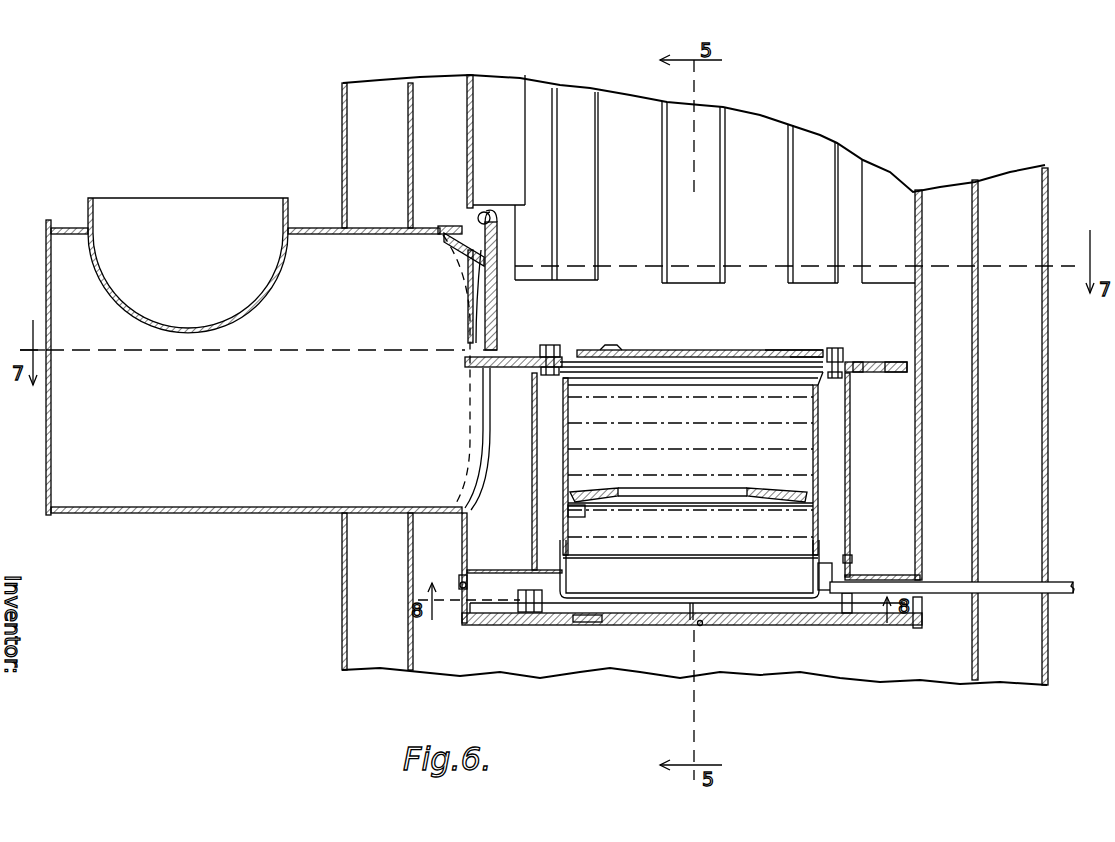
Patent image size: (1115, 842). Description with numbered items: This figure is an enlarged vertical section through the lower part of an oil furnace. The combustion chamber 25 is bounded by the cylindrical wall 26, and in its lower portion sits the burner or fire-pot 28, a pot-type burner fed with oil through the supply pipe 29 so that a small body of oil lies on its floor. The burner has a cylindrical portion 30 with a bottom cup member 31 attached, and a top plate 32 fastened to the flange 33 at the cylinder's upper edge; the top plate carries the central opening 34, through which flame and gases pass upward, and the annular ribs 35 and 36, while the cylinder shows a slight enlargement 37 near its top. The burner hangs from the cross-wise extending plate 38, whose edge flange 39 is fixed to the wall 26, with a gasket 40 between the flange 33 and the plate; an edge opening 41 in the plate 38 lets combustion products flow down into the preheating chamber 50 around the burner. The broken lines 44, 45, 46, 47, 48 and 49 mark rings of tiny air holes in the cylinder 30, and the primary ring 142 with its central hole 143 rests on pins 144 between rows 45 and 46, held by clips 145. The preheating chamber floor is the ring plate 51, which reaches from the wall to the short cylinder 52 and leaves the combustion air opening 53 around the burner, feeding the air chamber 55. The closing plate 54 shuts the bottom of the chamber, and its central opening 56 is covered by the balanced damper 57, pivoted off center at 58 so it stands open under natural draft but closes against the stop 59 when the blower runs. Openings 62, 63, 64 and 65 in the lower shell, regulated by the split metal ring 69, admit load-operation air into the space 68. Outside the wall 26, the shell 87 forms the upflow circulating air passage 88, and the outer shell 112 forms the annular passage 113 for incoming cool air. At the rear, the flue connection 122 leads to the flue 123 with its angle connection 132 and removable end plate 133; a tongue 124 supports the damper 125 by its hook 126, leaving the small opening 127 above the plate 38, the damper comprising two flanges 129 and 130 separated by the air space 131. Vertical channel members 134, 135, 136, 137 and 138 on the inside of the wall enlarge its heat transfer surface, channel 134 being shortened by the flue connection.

The combustion chamber 25 is at (753, 138).
The cylindrical wall 26 is at (923, 332).
The burner or fire-pot 28 is at (828, 445).
The supply pipe 29 is at (1062, 582).
The cylindrical portion 30 is at (801, 486).
The bottom cup member 31 is at (630, 600).
The top plate 32 is at (818, 355).
The flange 33 is at (851, 366).
The central opening 34 is at (622, 355).
The annular rib 35 is at (803, 352).
The annular rib 36 is at (778, 354).
The enlargement 37 is at (823, 386).
The cross-wise extending plate 38 is at (519, 356).
The edge flange 39 is at (893, 373).
The gasket 40 is at (532, 388).
The edge opening 41 is at (900, 362).
The ring of air holes 44 is at (791, 534).
The ring of air holes 45 is at (761, 513).
The ring of air holes 46 is at (786, 478).
The ring of air holes 47 is at (597, 450).
The ring of air holes 48 is at (597, 424).
The ring of air holes 49 is at (600, 398).
The preheating chamber 50 is at (882, 491).
The ring plate 51 is at (890, 574).
The short cylinder 52 is at (851, 558).
The combustion air opening 53 is at (817, 566).
The closing plate 54 is at (873, 627).
The air chamber 55 is at (837, 499).
The central opening 56 is at (788, 627).
The balanced damper 57 is at (738, 627).
The pivot 58 is at (700, 626).
The stop 59 is at (588, 613).
The opening 62 is at (470, 590).
The opening 63 is at (540, 613).
The opening 64 is at (680, 614).
The opening 65 is at (850, 614).
The space 68 is at (893, 630).
The split metal ring 69 is at (460, 583).
The cylindrical shell 87 is at (979, 205).
The upflow circulating air passage 88 is at (944, 205).
The outer shell 112 is at (1049, 202).
The annular passage 113 is at (1012, 460).
The flue connection 122 is at (473, 501).
The flue 123 is at (192, 513).
The tongue 124 is at (470, 241).
The damper 125 is at (500, 296).
The hook 126 is at (488, 212).
The small opening 127 is at (498, 352).
The flange 129 is at (500, 262).
The flange 130 is at (468, 306).
The air space 131 is at (478, 322).
The angle connection 132 is at (156, 210).
The removable end plate 133 is at (46, 283).
The vertical channel member 134 is at (496, 141).
The vertical channel member 135 is at (557, 184).
The vertical channel member 136 is at (693, 192).
The vertical channel member 137 is at (813, 204).
The vertical channel member 138 is at (888, 221).
The primary ring 142 is at (607, 489).
The central hole 143 is at (752, 491).
The pin 144 is at (583, 513).
The clip 145 is at (578, 488).